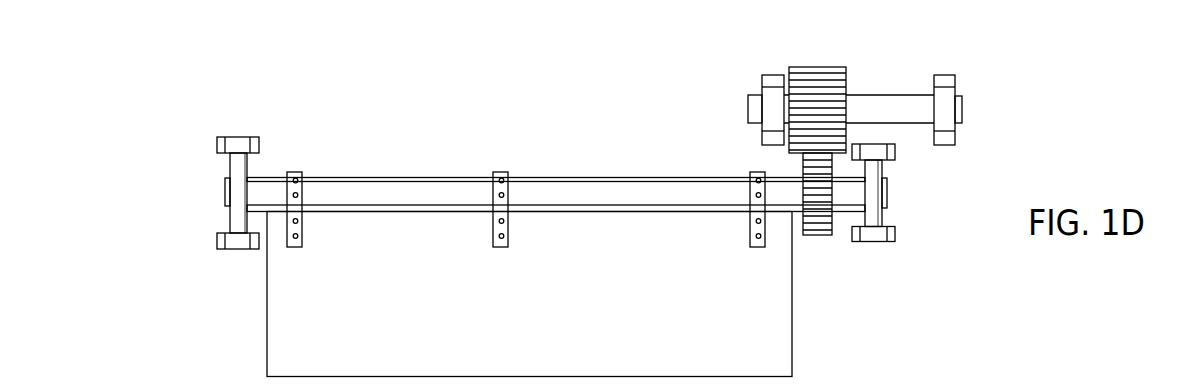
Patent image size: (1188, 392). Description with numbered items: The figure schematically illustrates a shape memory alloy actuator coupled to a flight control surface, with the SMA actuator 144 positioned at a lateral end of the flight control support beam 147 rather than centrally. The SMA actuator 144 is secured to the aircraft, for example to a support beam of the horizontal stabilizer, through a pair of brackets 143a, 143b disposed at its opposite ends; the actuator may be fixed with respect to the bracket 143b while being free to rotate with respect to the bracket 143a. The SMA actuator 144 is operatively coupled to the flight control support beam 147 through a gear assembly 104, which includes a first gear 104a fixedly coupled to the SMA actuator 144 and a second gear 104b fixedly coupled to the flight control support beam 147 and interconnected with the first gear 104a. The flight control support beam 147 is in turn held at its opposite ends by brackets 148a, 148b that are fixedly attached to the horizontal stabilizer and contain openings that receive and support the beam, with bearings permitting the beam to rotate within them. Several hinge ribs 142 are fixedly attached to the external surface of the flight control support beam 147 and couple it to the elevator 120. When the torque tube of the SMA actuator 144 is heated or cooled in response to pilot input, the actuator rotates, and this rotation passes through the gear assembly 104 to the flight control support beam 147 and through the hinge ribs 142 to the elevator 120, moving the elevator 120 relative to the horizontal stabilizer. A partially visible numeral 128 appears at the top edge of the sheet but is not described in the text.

The gear assembly 104 is at (785, 144).
The first gear 104a is at (813, 67).
The second gear 104b is at (813, 237).
The elevator 120 is at (792, 343).
The frame 128 is at (674, 4).
The hinge ribs 142 is at (295, 172).
The bracket 143a is at (770, 75).
The bracket 143b is at (943, 145).
The SMA actuator 144 is at (844, 97).
The flight control support beam 147 is at (595, 193).
The bracket 148a is at (243, 132).
The bracket 148b is at (895, 228).